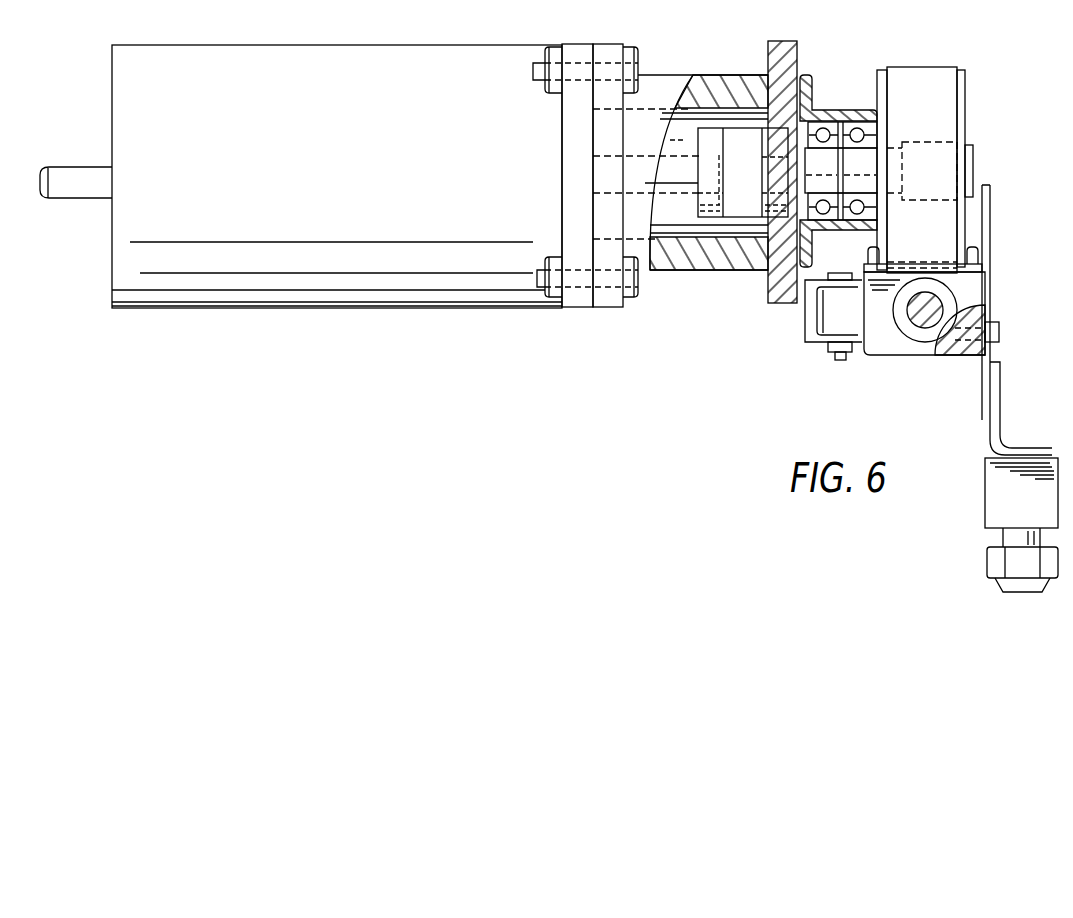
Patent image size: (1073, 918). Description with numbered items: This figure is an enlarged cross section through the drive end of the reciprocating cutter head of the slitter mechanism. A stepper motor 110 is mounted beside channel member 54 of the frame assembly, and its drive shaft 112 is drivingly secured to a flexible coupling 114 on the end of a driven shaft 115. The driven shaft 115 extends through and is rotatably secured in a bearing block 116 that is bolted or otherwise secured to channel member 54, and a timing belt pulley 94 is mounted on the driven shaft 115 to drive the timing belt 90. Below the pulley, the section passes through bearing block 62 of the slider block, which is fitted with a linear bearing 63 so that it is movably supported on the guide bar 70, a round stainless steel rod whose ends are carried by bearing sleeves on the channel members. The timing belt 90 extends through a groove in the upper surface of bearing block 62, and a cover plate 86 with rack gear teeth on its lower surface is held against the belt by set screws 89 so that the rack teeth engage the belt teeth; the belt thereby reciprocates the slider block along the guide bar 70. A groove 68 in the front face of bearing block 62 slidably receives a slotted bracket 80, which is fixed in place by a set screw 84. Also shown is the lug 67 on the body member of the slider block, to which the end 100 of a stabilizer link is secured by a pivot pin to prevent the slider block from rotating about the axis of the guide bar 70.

The stepper motor 110 is at (429, 48).
The channel member 54 is at (768, 55).
The drive shaft 112 is at (688, 184).
The flexible coupling 114 is at (745, 200).
The bearing block 116 is at (818, 108).
The timing belt 90 is at (922, 74).
The timing belt pulley 94 is at (960, 101).
The driven shaft 115 is at (975, 170).
The bracket 80 is at (992, 231).
The set screws 89 is at (866, 253).
The cover plate 86 is at (985, 270).
The lug 67 is at (830, 312).
The end of stabilizer link 100 is at (818, 345).
The linear bearings 63 is at (906, 326).
The bearing block 62 is at (905, 353).
The guide bar 70 is at (925, 323).
The grooves 68 is at (982, 353).
The set screws 84 is at (1000, 334).